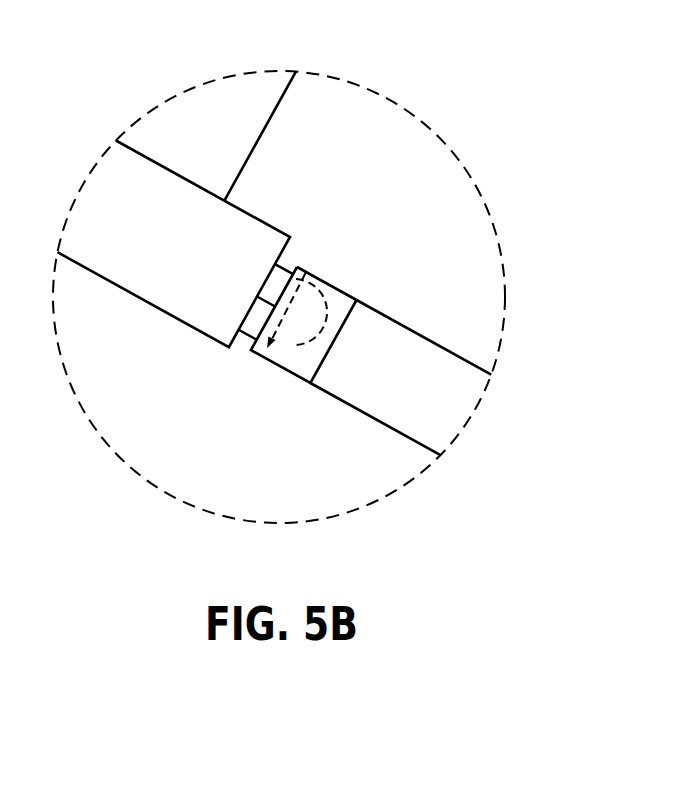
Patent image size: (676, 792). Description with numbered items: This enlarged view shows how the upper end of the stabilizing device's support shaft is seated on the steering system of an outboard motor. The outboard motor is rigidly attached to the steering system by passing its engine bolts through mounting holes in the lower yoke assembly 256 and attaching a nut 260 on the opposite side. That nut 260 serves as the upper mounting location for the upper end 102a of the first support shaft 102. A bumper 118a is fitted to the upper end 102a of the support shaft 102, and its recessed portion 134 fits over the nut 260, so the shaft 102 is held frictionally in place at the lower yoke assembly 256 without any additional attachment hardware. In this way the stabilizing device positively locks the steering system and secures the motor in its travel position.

The first support shaft 102 is at (435, 392).
The upper end of first support shaft 102a is at (398, 299).
The bumper 118a is at (320, 278).
The recessed portion 134 is at (293, 348).
The lower yoke assembly 256 is at (170, 317).
The nut 260 is at (245, 333).